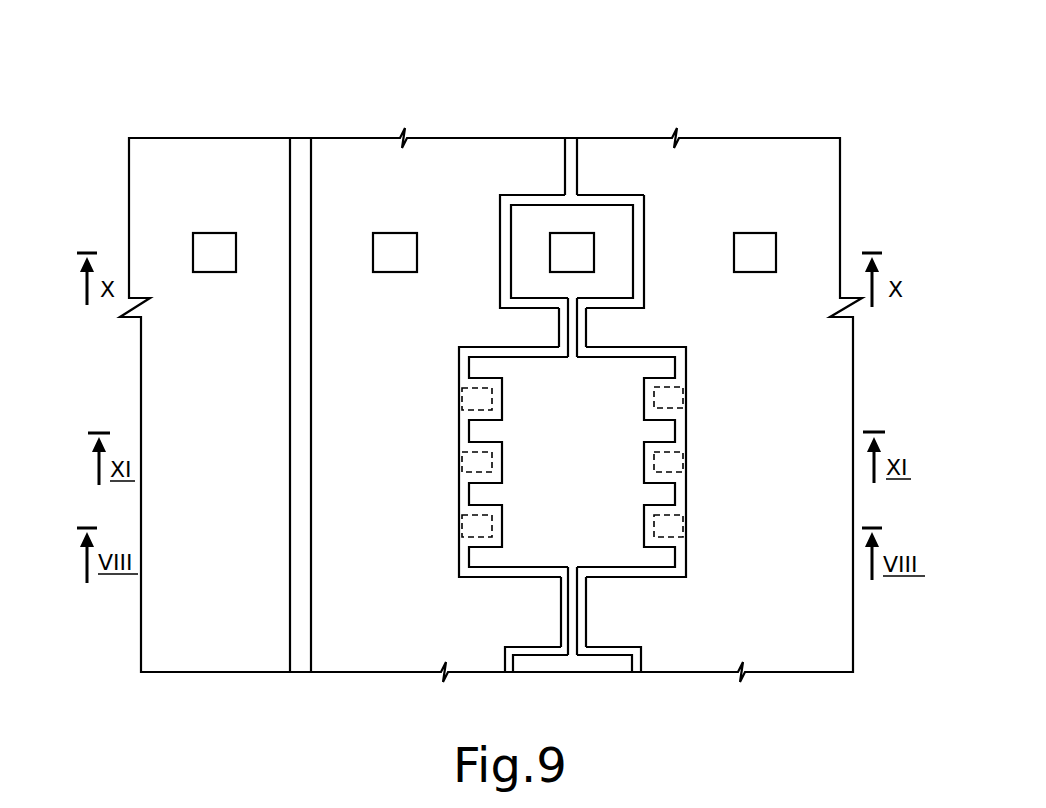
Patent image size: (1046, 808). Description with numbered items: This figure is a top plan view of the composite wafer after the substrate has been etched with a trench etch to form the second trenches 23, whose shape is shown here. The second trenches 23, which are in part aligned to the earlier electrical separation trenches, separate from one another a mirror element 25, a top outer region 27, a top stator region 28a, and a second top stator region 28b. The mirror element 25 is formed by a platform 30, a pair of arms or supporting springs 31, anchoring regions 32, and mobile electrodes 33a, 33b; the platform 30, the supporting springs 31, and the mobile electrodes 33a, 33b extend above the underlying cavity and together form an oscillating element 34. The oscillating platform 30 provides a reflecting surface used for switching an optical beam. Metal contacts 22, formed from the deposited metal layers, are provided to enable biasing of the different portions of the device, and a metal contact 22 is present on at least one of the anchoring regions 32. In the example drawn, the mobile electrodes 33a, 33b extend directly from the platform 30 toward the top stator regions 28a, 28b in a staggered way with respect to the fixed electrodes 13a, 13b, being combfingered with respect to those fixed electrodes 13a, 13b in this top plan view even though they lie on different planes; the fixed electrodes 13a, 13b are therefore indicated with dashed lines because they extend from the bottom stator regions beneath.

The fixed electrode 13a is at (464, 460).
The fixed electrode 13b is at (672, 395).
The metal contact 22 is at (220, 258).
The second trench 23 is at (595, 203).
The mirror element 25 is at (652, 246).
The top outer region 27 is at (203, 167).
The top stator region 28a is at (365, 167).
The second top stator region 28b is at (794, 153).
The platform 30 is at (559, 538).
The supporting spring 31 is at (572, 333).
The anchoring region 32 is at (535, 288).
The mobile electrode 33a is at (487, 367).
The mobile electrode 33b is at (663, 368).
The oscillating element 34 is at (654, 344).